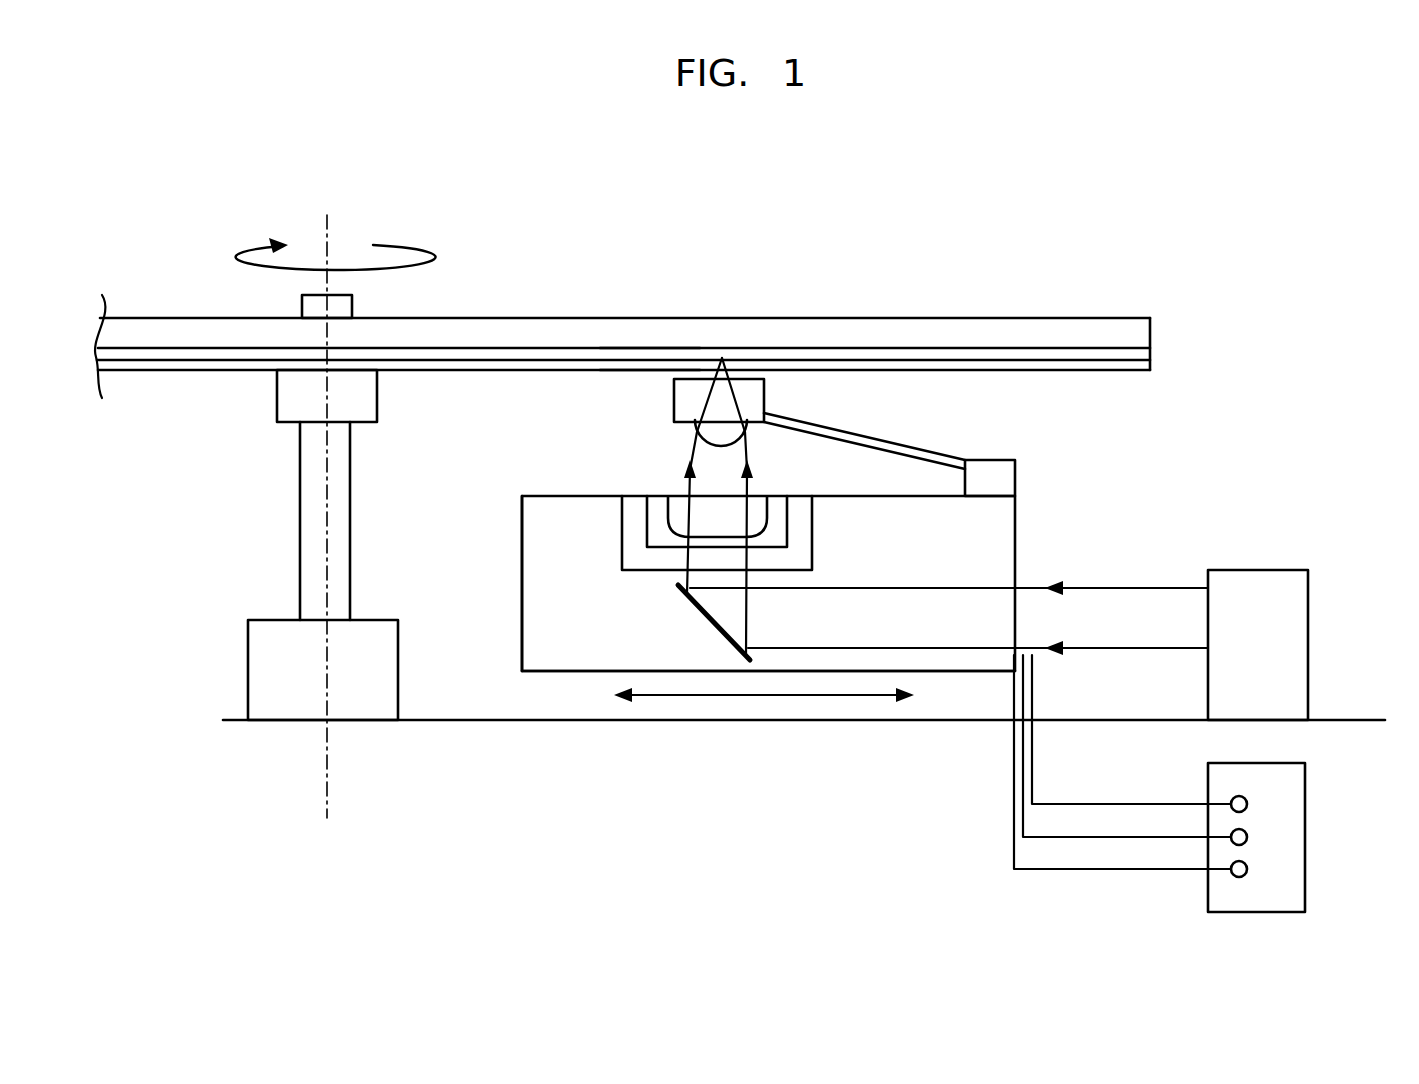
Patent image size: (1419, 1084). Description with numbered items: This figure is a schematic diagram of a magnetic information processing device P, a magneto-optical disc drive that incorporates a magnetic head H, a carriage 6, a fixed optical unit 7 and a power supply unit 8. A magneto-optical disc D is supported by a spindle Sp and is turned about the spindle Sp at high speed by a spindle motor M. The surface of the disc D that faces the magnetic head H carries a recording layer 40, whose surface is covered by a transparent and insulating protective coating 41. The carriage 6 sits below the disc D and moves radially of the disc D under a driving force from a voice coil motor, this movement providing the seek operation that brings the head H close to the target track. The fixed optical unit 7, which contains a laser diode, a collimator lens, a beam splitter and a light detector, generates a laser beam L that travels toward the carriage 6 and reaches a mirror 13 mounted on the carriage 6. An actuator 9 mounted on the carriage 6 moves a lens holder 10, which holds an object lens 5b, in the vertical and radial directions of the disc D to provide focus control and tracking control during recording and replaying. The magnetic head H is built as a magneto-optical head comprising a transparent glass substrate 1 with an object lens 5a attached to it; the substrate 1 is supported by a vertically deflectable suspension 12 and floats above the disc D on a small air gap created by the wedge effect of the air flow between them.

The transparent substrate 1 is at (766, 398).
The object lens 5a is at (738, 435).
The object lens 5b is at (678, 522).
The carriage 6 is at (998, 533).
The fixed optical unit 7 is at (1250, 582).
The power supply unit 8 is at (1297, 797).
The actuator 9 is at (608, 565).
The lens holder 10 is at (660, 507).
The suspension 12 is at (878, 442).
The mirror 13 is at (695, 612).
The recording layer 40 is at (1102, 353).
The protective coating 41 is at (1053, 370).
The rotation axis C is at (328, 502).
The magneto-optical disc D is at (971, 292).
The magnetic head H is at (705, 430).
The laser beam L is at (1108, 589).
The spindle motor M is at (262, 668).
The magnetic information processing device P is at (1201, 286).
The spindle Sp is at (262, 494).